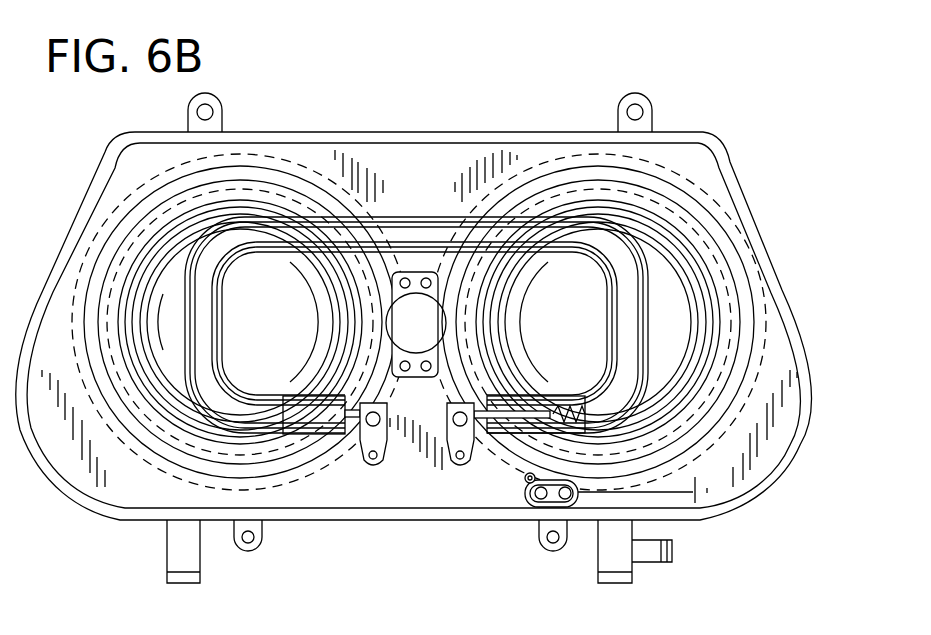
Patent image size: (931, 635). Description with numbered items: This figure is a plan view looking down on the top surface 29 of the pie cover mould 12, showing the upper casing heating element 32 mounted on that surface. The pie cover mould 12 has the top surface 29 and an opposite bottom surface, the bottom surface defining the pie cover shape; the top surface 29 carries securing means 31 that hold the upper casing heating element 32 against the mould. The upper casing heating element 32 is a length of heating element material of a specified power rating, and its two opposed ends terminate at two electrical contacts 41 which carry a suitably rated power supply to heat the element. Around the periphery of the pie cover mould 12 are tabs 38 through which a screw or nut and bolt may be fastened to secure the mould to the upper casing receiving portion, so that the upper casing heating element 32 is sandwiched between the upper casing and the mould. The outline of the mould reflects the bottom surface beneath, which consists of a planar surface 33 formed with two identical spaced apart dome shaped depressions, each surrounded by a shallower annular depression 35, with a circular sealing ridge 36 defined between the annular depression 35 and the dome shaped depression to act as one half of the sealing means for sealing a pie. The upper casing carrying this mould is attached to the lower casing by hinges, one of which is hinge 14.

The pie cover mould 12 is at (808, 432).
The hinge 14 is at (202, 558).
The tabs 38 is at (218, 102).
The planar surface 33 is at (726, 132).
The top surface 29 is at (706, 175).
The circular sealing ridge 36 is at (745, 193).
The shallow annular depression 35 is at (748, 315).
The upper casing heating element 32 is at (634, 281).
The securing means 31 is at (649, 300).
The electrical contacts 41 is at (377, 466).